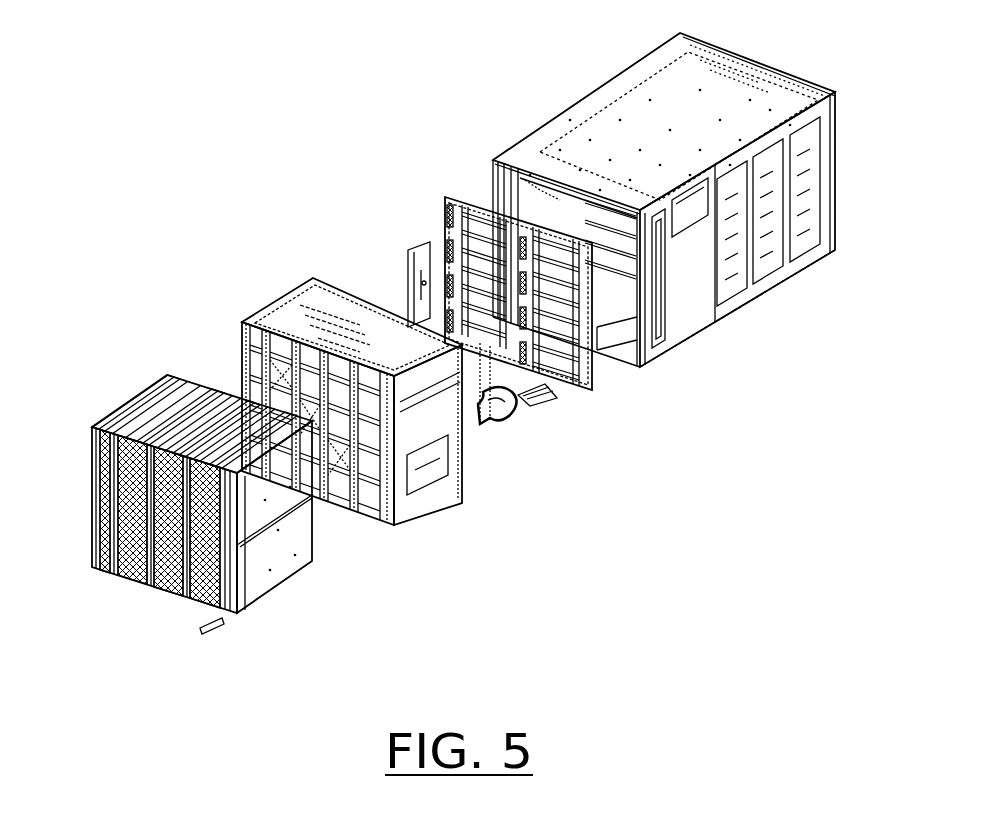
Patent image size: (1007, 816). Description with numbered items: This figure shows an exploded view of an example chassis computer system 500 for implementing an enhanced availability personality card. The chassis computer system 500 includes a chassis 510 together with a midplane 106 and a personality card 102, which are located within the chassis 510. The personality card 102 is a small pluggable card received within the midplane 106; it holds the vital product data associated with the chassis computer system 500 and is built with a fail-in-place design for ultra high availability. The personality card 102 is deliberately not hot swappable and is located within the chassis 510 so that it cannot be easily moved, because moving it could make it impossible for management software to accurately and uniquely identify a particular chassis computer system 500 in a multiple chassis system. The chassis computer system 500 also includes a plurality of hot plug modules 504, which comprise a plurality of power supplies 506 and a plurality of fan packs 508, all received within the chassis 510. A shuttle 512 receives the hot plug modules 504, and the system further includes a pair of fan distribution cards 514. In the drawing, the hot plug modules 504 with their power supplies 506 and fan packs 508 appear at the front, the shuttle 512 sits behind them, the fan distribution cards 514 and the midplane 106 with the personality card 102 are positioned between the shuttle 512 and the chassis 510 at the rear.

The chassis computer system 500 is at (473, 54).
The personality card 102 is at (548, 403).
The midplane 106 is at (465, 200).
The hot plug modules 504 is at (238, 624).
The power supplies 506 is at (88, 553).
The fan packs 508 is at (220, 580).
The chassis 510 is at (633, 128).
The shuttle 512 is at (313, 297).
The fan distribution cards 514 is at (415, 253).